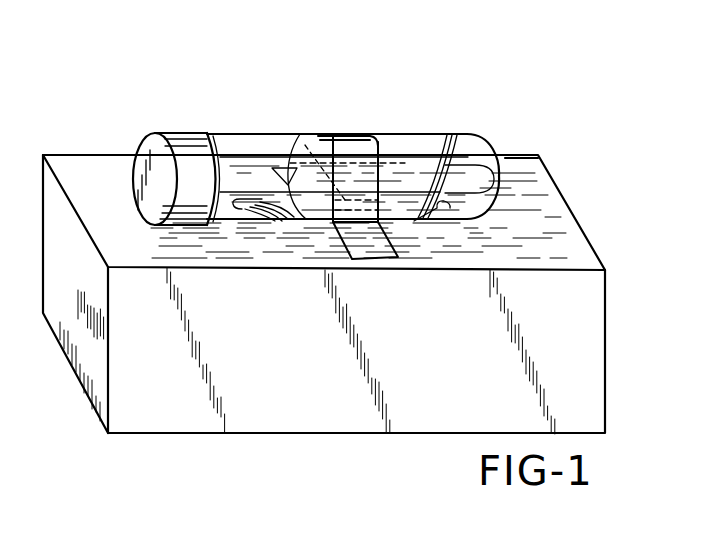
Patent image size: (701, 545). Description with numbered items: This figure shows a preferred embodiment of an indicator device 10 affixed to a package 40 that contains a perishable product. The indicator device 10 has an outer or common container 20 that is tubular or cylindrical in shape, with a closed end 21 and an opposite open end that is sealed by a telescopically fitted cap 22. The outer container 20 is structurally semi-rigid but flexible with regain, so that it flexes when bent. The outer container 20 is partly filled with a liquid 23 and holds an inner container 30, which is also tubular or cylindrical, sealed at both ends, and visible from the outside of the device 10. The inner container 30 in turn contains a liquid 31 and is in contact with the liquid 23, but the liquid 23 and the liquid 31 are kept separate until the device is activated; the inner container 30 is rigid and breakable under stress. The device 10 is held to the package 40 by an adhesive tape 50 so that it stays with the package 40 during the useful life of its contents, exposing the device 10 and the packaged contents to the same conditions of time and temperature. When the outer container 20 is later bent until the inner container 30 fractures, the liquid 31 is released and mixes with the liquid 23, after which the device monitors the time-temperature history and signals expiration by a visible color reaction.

The indicator device 10 is at (508, 102).
The outer container 20 is at (291, 224).
The closed end 21 is at (545, 166).
The cap 22 is at (183, 133).
The liquid 23 is at (399, 175).
The inner container 30 is at (462, 217).
The liquid 31 is at (243, 207).
The package 40 is at (563, 246).
The adhesive tape 50 is at (405, 250).